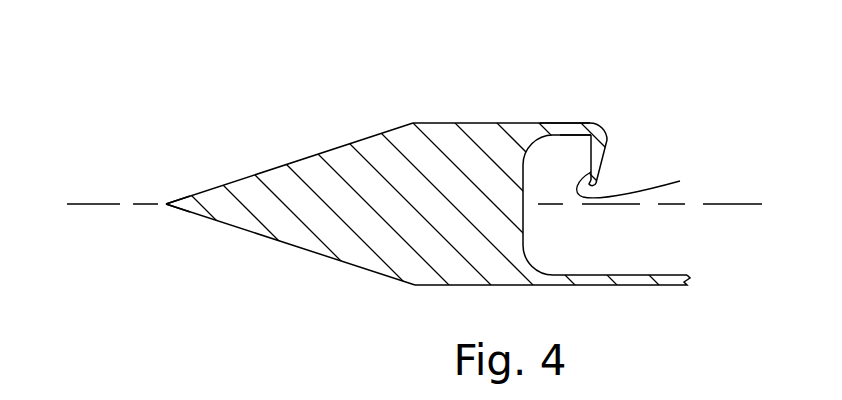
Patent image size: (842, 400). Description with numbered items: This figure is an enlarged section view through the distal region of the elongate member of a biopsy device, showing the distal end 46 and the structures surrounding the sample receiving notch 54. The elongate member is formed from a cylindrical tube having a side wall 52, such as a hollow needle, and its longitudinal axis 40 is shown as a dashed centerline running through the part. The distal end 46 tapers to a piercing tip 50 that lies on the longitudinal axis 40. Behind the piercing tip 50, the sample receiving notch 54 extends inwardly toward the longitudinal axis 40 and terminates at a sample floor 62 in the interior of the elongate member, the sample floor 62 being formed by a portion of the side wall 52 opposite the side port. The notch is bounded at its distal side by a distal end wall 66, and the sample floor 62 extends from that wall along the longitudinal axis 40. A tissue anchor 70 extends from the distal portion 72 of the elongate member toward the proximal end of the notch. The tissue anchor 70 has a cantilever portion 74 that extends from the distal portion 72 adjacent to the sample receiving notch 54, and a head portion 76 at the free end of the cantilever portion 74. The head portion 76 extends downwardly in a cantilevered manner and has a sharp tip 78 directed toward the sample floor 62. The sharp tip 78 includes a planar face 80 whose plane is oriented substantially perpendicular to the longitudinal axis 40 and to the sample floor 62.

The longitudinal axis 40 is at (155, 204).
The distal end 46 is at (223, 134).
The piercing tip 50 is at (165, 208).
The side wall 52 is at (597, 280).
The sample receiving notch 54 is at (711, 139).
The sample floor 62 is at (621, 276).
The distal end wall 66 is at (477, 123).
The tissue anchor 70 is at (616, 108).
The distal portion 72 is at (484, 91).
The cantilever portion 74 is at (562, 122).
The head portion 76 is at (608, 140).
The sharp tip 78 is at (603, 188).
The planar face 80 is at (680, 181).